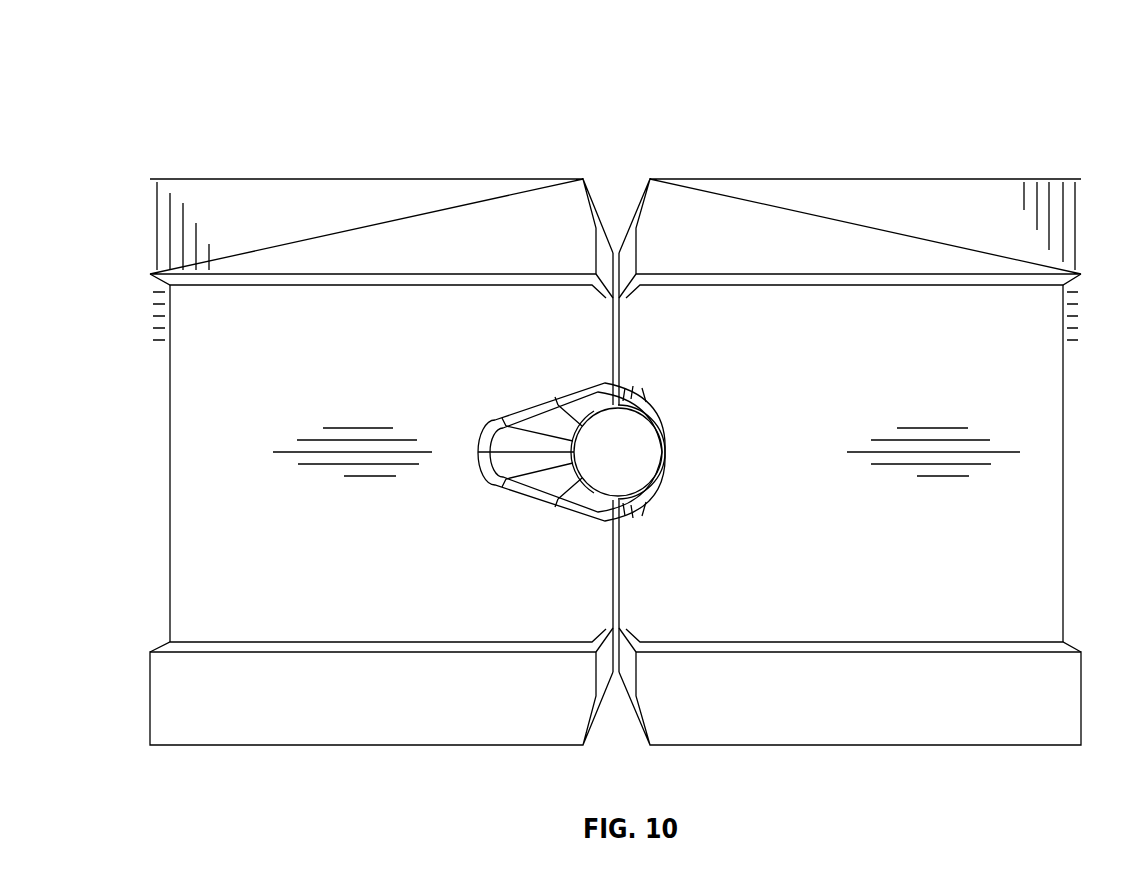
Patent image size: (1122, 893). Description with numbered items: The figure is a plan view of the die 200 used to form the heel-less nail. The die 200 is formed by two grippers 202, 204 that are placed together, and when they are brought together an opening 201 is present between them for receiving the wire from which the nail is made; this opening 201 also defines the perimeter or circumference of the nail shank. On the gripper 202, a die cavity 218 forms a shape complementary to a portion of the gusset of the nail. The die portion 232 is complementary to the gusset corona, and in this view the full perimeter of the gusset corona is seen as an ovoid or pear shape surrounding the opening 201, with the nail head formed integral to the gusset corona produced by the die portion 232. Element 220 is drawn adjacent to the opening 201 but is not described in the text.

The die 200 is at (126, 52).
The opening 201 is at (627, 437).
The gripper 202 is at (401, 193).
The gripper 204 is at (843, 193).
The die cavity 218 is at (507, 440).
The ring lip 220 is at (666, 454).
The gusset corona die portion 232 is at (585, 512).